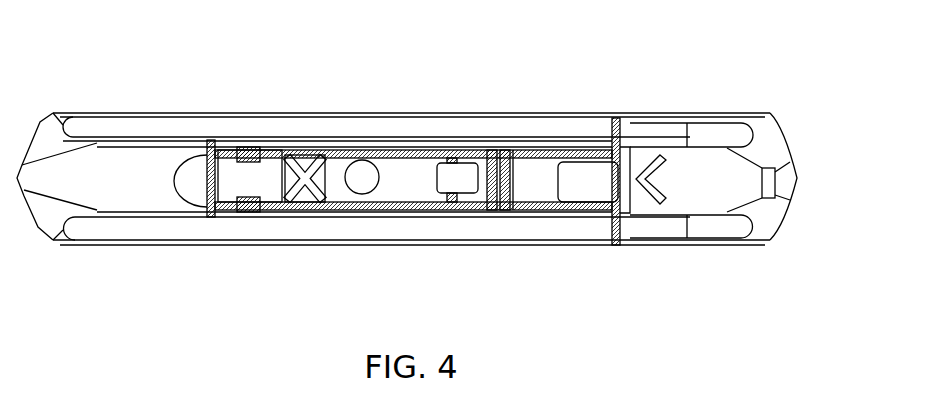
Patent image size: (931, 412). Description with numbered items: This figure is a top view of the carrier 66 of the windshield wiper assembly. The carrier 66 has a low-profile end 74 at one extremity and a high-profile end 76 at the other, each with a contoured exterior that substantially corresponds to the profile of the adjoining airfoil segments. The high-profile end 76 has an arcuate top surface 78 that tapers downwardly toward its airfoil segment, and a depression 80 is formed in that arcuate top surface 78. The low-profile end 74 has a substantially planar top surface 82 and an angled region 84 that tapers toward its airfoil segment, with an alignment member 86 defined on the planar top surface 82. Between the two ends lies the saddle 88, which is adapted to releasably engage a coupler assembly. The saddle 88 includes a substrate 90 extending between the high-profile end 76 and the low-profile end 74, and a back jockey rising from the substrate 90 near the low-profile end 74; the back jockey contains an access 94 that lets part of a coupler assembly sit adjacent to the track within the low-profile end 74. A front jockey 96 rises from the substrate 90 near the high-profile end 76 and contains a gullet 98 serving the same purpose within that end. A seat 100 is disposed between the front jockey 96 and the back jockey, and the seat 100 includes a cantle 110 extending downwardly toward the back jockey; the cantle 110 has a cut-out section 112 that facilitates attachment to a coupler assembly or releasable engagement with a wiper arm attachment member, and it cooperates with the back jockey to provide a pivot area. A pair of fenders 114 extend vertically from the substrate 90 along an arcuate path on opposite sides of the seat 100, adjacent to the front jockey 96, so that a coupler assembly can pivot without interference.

The carrier 66 is at (576, 255).
The low-profile end 74 is at (720, 96).
The high-profile end 76 is at (151, 253).
The arcuate top surface 78 is at (127, 158).
The depression 80 is at (192, 191).
The planar top surface 82 is at (703, 188).
The angled region 84 is at (783, 183).
The alignment member 86 is at (643, 191).
The saddle 88 is at (458, 95).
The substrate 90 is at (345, 241).
The access 94 is at (585, 172).
The front jockey 96 is at (228, 202).
The gullet 98 is at (234, 160).
The seat 100 is at (410, 188).
The cantle 110 is at (484, 150).
The cut-out section 112 is at (461, 184).
The fenders 114 is at (222, 146).